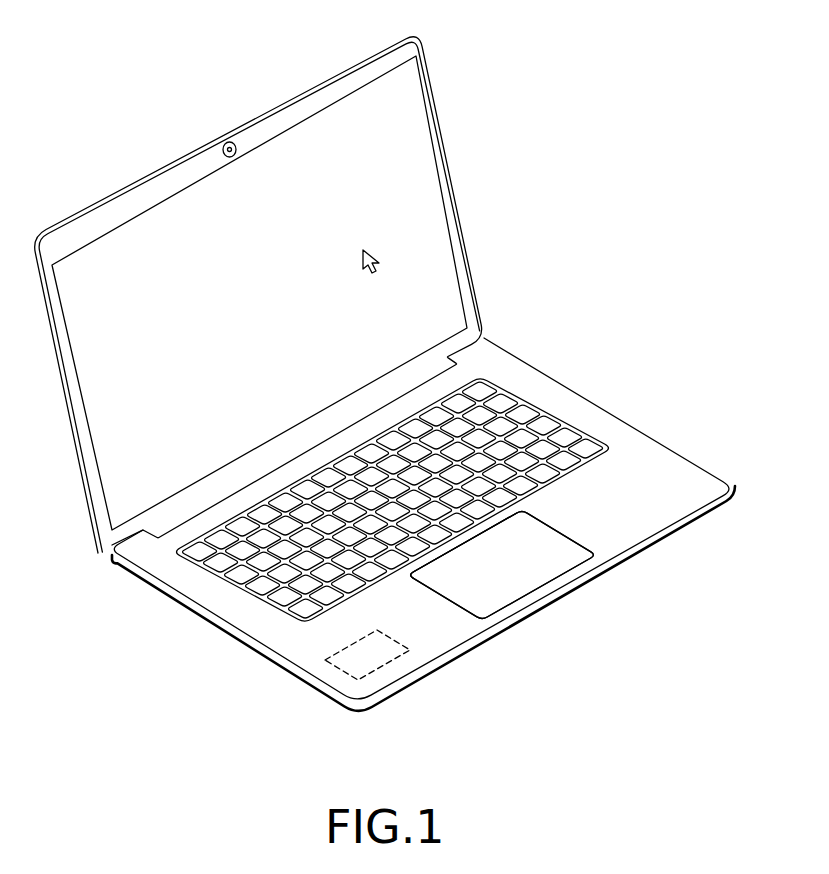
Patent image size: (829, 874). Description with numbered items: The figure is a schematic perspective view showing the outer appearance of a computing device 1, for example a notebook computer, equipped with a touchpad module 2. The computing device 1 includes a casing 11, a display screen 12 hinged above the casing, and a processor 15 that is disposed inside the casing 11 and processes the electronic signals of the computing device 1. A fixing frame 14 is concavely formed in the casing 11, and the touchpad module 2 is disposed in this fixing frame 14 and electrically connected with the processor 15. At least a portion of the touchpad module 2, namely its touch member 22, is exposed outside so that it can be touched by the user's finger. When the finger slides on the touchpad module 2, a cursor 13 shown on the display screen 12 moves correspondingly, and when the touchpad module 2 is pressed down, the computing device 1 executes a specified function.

The computing device 1 is at (628, 148).
The casing 11 is at (653, 442).
The display screen 12 is at (413, 118).
The cursor 13 is at (368, 250).
The fixing frame 14 is at (437, 612).
The processor 15 is at (357, 665).
The touchpad module 2 is at (552, 538).
The touch member 22 is at (502, 588).